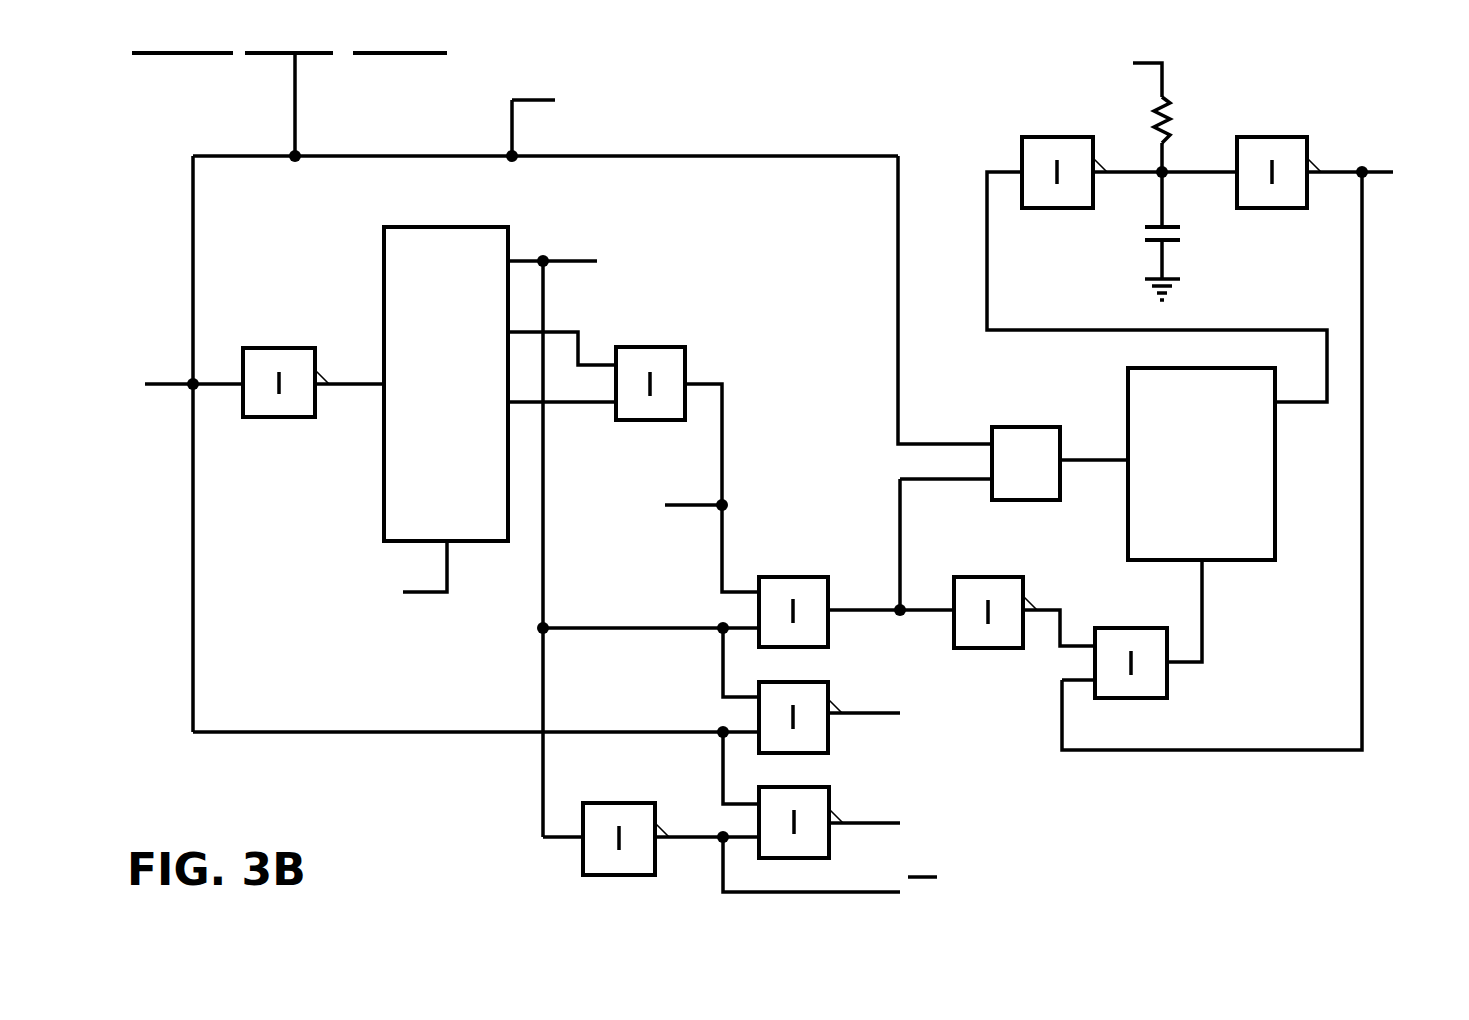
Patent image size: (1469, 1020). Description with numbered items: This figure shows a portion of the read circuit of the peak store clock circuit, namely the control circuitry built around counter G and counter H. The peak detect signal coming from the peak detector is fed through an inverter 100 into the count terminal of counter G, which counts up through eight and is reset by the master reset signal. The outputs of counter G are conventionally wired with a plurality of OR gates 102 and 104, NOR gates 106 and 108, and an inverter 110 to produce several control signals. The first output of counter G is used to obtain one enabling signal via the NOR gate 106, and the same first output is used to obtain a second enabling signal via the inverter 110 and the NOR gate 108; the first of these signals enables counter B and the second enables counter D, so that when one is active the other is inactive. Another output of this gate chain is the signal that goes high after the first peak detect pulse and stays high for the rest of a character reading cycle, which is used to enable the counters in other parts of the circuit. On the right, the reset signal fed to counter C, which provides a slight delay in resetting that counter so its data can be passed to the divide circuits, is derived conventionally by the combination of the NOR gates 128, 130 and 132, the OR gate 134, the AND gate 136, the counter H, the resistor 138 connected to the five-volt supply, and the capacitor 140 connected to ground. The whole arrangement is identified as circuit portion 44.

The timing circuit 44 is at (497, 757).
The inverter 100 is at (262, 352).
The OR gate 102 is at (657, 352).
The OR gate 104 is at (786, 580).
The NOR gate 106 is at (820, 690).
The NOR gate 108 is at (820, 805).
The inverter 110 is at (603, 818).
The NOR gate 128 is at (1010, 582).
The NOR gate 130 is at (1040, 143).
The NOR gate 132 is at (1290, 143).
The OR gate 134 is at (1150, 690).
The AND gate 136 is at (1018, 432).
The resistor 138 is at (1170, 122).
The capacitor 140 is at (1155, 240).